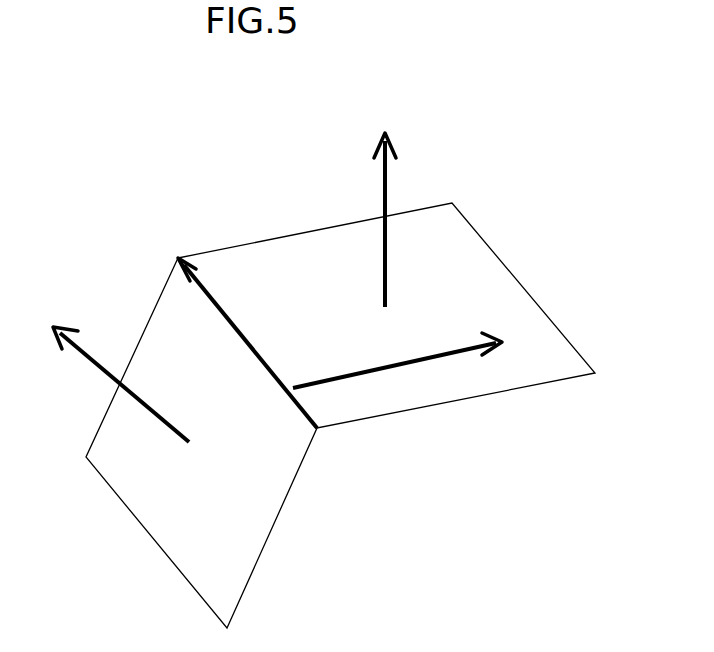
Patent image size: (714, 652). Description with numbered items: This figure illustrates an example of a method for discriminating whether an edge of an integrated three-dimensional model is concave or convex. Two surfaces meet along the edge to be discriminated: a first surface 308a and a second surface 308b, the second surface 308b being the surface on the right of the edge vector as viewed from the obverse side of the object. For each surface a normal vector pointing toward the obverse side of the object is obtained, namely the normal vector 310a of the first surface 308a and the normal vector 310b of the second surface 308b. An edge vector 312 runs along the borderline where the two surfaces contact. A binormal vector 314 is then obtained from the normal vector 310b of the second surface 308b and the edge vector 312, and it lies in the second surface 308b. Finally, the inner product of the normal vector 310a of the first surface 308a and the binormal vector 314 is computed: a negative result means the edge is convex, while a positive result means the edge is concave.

The first surface 308a is at (133, 520).
The second surface 308b is at (508, 295).
The normal vector of the first surface 310a is at (93, 362).
The normal vector of the second surface 310b is at (387, 192).
The edge vector 312 is at (222, 310).
The binormal vector 314 is at (450, 355).